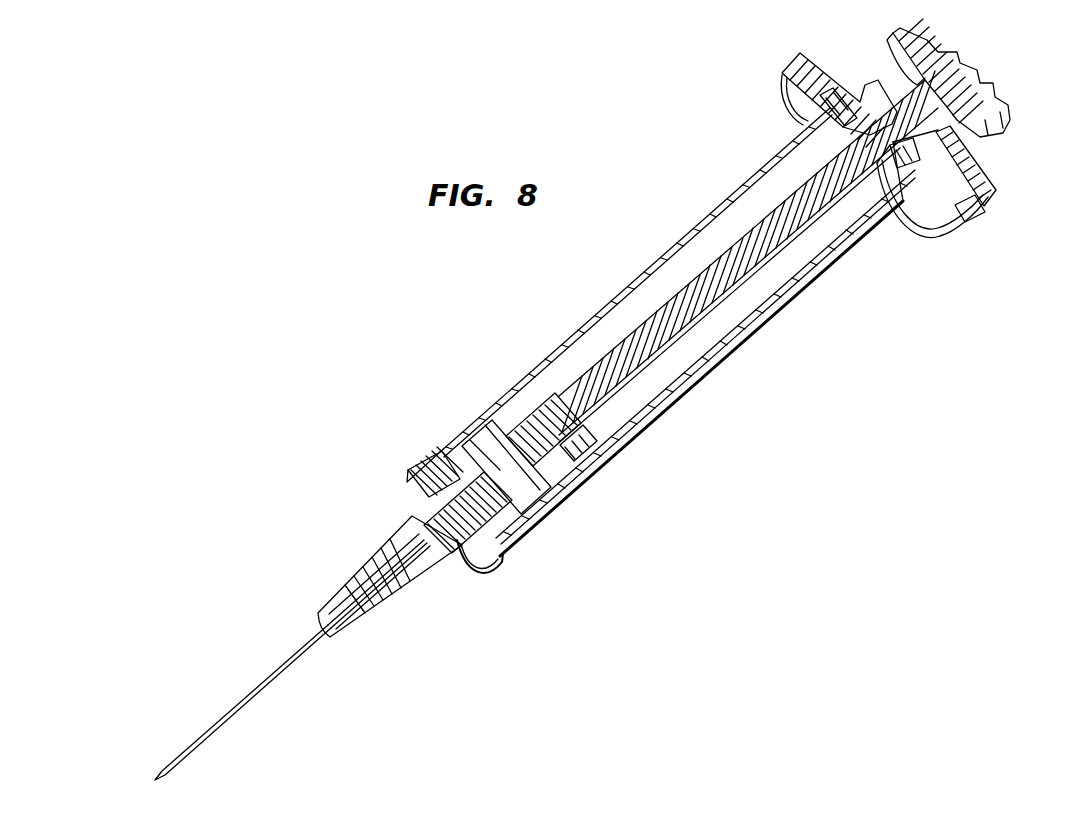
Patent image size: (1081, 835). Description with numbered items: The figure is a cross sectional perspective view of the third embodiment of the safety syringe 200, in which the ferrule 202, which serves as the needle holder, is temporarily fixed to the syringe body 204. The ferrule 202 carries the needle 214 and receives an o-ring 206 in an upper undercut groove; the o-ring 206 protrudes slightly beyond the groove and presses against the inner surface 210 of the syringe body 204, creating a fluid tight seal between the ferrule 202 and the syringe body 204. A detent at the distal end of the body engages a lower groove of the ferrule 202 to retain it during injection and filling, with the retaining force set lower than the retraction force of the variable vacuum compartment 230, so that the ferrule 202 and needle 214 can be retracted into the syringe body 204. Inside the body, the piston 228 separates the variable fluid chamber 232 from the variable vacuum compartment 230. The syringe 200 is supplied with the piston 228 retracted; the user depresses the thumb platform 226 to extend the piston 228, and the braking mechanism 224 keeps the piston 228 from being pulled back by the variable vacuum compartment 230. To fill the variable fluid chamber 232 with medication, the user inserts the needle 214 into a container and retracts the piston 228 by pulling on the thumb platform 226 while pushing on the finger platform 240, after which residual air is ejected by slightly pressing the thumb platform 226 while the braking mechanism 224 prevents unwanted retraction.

The safety syringe 200 is at (421, 289).
The ferrule 202 is at (443, 548).
The syringe body 204 is at (748, 339).
The o-ring 206 is at (435, 452).
The inner surface 210 is at (717, 213).
The needle 214 is at (288, 672).
The braking mechanism 224 is at (968, 160).
The thumb platform 226 is at (962, 65).
The piston 228 is at (602, 452).
The variable vacuum compartment 230 is at (804, 255).
The variable fluid chamber 232 is at (477, 447).
The finger platform 240 is at (980, 213).